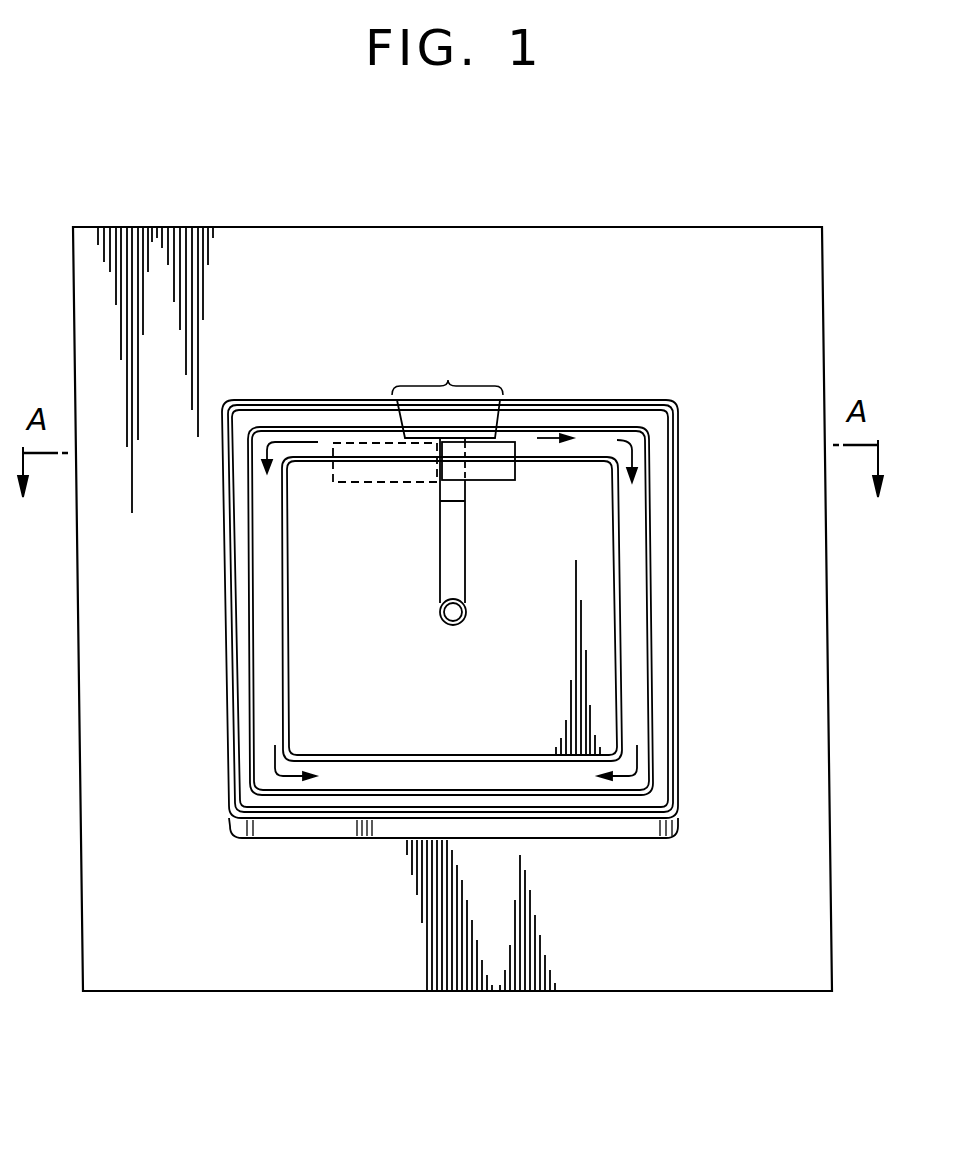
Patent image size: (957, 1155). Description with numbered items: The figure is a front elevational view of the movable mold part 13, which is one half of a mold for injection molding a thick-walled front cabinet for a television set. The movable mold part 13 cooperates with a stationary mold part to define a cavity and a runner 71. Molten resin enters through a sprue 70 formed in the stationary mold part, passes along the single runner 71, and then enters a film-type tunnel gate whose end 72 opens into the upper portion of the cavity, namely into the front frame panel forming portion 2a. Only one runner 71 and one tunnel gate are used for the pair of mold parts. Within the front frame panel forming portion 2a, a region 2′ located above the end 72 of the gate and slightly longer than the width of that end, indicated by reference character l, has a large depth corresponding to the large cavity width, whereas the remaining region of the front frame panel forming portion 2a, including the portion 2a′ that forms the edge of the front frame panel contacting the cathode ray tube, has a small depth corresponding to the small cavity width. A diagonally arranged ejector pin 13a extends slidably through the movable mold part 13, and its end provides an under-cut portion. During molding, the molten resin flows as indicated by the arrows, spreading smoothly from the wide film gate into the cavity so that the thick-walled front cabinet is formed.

The movable mold part 13 is at (800, 772).
The ejector pin 13a is at (352, 443).
The region of the front frame panel forming portion 2′ is at (400, 424).
The region indicated by reference character l is at (447, 360).
The front frame panel forming portion 2a is at (583, 418).
The portion of the cavity for forming the edge of the front frame panel 2a′ is at (592, 455).
The end of the film-type tunnel gate 72 is at (483, 442).
The runner 71 is at (440, 547).
The sprue 70 is at (452, 625).